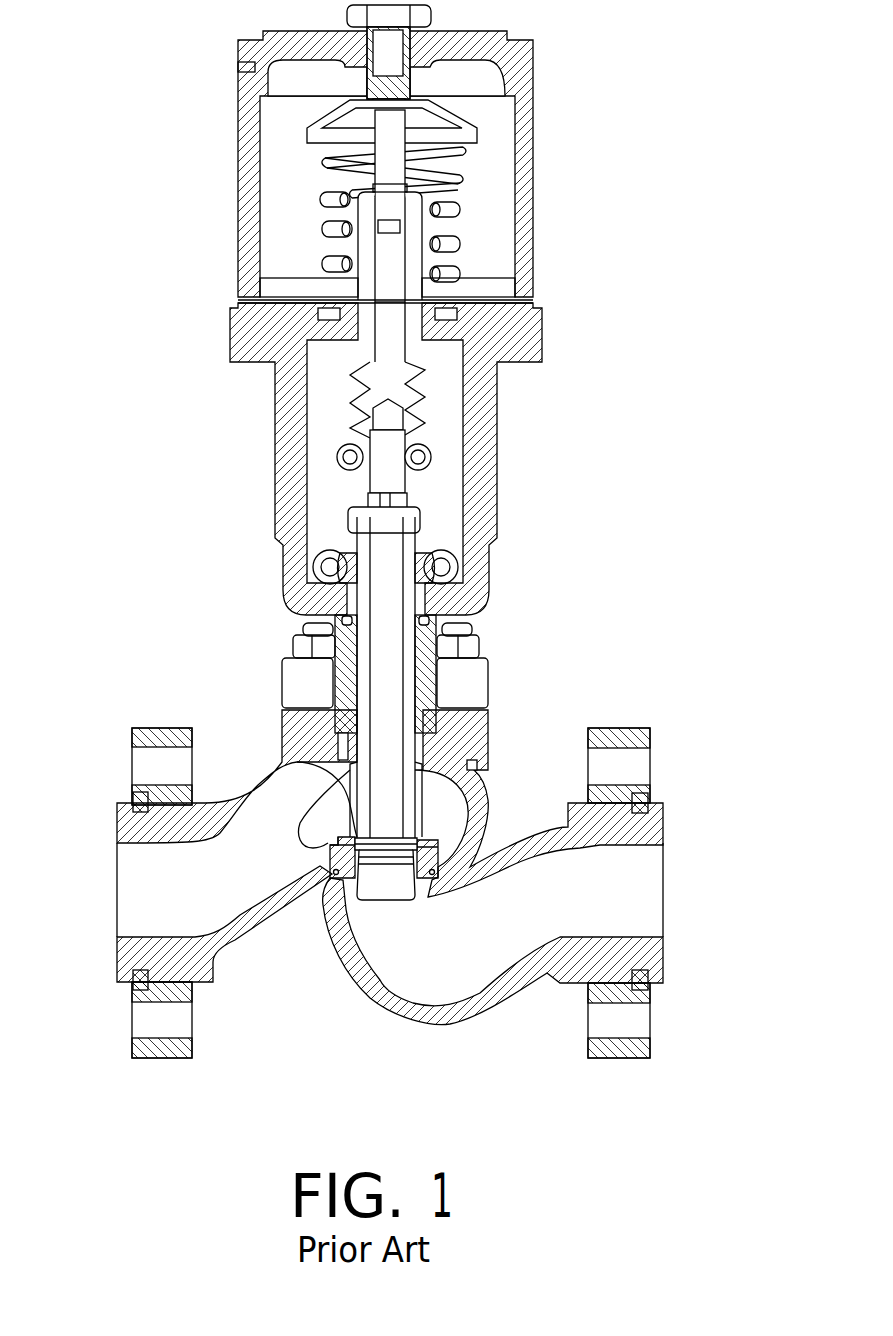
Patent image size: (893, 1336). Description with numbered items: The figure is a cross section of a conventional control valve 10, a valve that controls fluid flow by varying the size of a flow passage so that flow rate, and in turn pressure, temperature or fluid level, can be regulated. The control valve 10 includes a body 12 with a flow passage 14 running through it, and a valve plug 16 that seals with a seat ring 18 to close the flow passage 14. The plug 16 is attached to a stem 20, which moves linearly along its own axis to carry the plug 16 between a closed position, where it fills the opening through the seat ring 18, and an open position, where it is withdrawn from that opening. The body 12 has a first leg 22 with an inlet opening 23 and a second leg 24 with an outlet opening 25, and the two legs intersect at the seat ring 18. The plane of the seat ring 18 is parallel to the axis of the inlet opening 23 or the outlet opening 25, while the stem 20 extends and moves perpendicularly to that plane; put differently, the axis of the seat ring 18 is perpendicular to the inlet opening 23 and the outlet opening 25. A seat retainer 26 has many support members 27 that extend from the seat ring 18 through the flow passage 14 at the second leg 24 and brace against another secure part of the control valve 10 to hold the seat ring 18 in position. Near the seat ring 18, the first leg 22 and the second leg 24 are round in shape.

The control valve 10 is at (397, 573).
The body 12 is at (390, 901).
The flow passage 14 is at (235, 890).
The valve plug 16 is at (333, 935).
The seat ring 18 is at (330, 863).
The stem 20 is at (398, 838).
The first leg 22 is at (580, 930).
The inlet opening 23 is at (690, 872).
The second leg 24 is at (213, 983).
The outlet opening 25 is at (101, 894).
The seat retainer 26 is at (325, 843).
The support members 27 is at (337, 836).